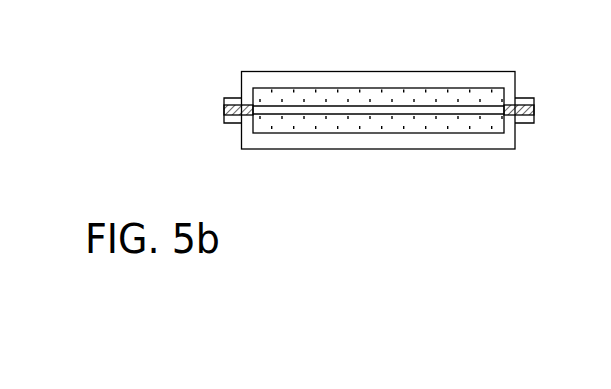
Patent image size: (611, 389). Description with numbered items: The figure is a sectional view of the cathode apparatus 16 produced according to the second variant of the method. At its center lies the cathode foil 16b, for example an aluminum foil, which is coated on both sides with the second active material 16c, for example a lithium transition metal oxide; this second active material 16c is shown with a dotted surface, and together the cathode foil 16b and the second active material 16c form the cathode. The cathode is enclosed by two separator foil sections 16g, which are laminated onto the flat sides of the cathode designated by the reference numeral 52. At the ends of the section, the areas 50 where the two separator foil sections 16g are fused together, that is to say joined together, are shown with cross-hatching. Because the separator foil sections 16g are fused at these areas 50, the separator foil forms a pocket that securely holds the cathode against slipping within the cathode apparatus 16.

The cathode apparatus 16 is at (178, 71).
The separator foil section 16g is at (457, 81).
The cathode foil 16b is at (383, 110).
The second active material 16c is at (278, 127).
The areas of fused separator foil sections 50 is at (524, 110).
The flat sides of the cathode laminated with separator foil sections 52 is at (287, 87).